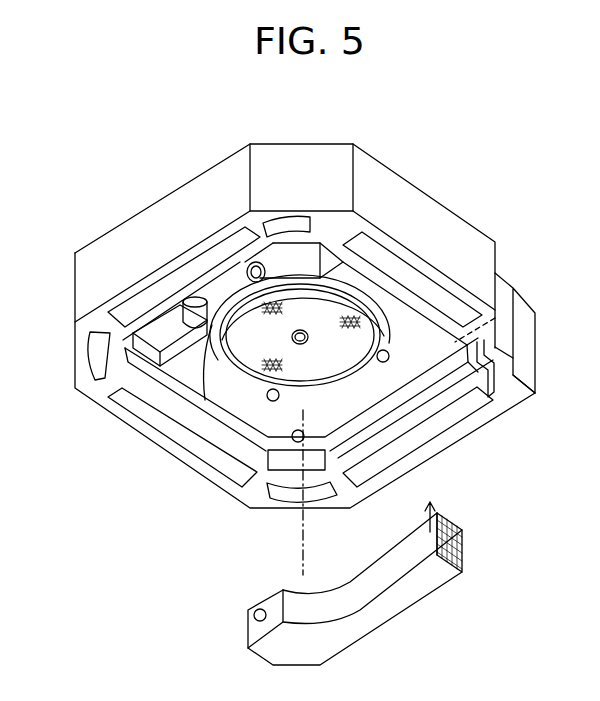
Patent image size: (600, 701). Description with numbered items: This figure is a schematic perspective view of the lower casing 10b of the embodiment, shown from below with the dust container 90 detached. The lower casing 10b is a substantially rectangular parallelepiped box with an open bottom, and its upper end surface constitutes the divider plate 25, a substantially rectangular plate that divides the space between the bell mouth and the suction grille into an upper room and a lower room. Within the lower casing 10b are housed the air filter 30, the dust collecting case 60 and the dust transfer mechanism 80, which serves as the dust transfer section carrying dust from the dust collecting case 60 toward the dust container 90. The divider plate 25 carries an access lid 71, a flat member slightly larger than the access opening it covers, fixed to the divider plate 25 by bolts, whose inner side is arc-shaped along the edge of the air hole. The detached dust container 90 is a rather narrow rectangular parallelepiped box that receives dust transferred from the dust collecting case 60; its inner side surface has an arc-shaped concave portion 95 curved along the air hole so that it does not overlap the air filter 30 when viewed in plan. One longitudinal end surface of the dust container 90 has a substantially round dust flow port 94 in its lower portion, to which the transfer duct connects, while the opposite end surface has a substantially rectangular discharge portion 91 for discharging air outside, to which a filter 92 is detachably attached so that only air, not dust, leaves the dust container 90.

The lower casing 10b is at (438, 203).
The air filter 30 is at (294, 299).
The dust transfer mechanism 80 is at (170, 348).
The divider plate 25 is at (193, 367).
The dust collecting case 60 is at (212, 325).
The access lid 71 is at (266, 456).
The arc-shaped concave portion 95 is at (330, 575).
The dust container 90 is at (373, 622).
The discharge portion 91 is at (455, 522).
The filter 92 is at (467, 572).
The dust flow port 94 is at (253, 627).